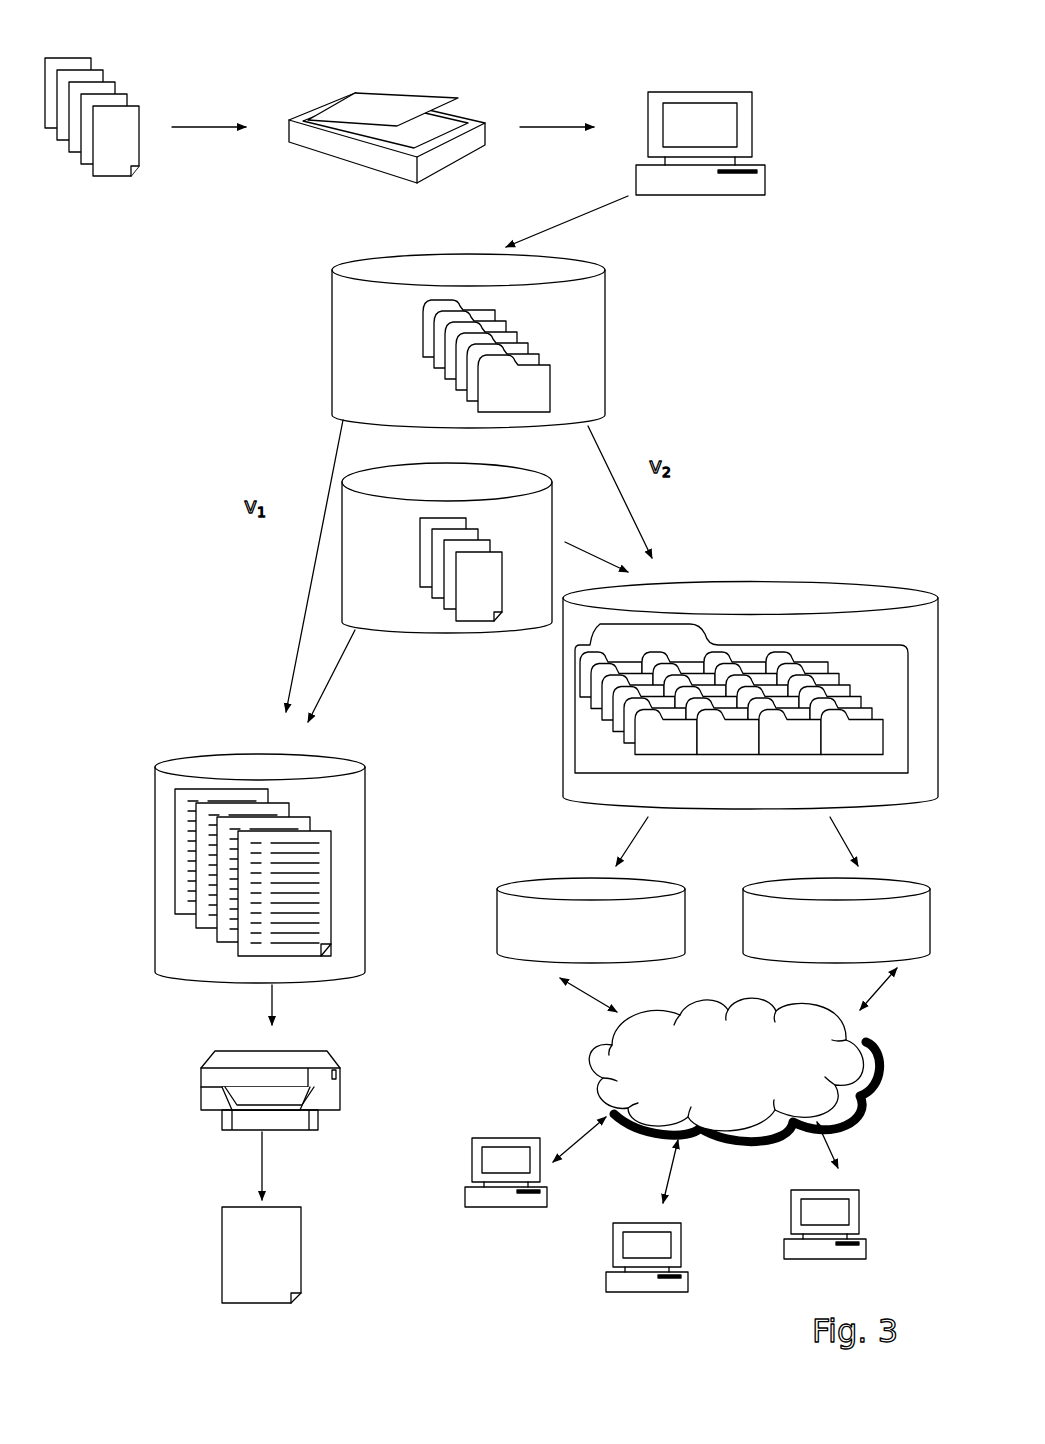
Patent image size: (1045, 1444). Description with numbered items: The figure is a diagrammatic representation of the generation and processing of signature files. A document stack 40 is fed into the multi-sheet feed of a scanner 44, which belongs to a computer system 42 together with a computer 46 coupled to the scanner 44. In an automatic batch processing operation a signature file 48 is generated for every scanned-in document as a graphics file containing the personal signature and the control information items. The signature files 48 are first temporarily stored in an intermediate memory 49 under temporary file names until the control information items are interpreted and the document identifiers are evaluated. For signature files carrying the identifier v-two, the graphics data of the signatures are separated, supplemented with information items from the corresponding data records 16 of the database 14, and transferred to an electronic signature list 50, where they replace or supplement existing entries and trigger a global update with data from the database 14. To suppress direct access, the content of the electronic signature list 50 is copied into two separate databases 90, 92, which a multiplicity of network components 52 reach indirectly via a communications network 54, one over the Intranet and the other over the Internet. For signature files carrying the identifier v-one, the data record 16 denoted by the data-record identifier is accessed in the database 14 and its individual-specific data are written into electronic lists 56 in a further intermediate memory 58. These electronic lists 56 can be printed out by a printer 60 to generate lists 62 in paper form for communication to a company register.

The document stack 40 is at (115, 113).
The scanner 44 is at (468, 137).
The computer system 42 is at (732, 110).
The computer 46 is at (757, 178).
The intermediate memory 49 is at (534, 341).
The signature file 48 is at (533, 397).
The database 14 is at (447, 624).
The data record 16 is at (487, 610).
The electronic signature list 50 is at (742, 603).
The further intermediate memory 58 is at (283, 824).
The electronic list 56 is at (303, 877).
The printer 60 is at (212, 1103).
The list in paper form 62 is at (283, 1287).
The database 90 is at (535, 945).
The database 92 is at (865, 887).
The communications network 54 is at (608, 1060).
The network component 52 is at (507, 1198).